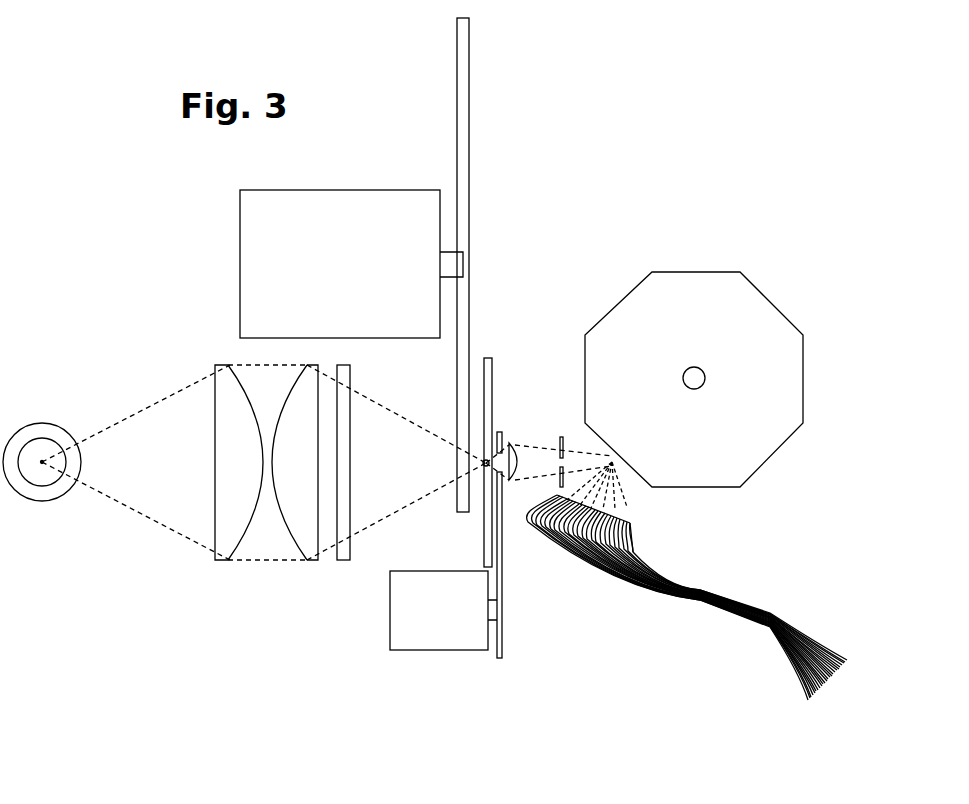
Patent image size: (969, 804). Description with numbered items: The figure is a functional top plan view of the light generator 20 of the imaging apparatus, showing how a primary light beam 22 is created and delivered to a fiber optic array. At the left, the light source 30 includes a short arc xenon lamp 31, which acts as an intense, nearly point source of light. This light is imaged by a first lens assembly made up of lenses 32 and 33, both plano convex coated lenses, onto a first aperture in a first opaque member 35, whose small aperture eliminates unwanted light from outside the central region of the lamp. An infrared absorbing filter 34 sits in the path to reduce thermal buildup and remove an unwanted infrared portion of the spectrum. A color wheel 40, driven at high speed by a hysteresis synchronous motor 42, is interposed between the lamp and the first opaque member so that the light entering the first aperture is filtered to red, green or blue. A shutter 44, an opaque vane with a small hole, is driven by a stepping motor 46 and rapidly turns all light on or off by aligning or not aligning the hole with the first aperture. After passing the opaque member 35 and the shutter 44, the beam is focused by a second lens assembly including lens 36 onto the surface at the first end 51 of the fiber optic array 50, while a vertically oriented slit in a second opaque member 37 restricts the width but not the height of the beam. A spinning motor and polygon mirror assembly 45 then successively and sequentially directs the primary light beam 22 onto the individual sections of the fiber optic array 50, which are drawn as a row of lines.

The light generator 20 is at (210, 173).
The primary light beam 22 is at (363, 397).
The light source 30 is at (278, 633).
The short arc xenon lamp 31 is at (70, 487).
The lens 32 is at (217, 558).
The lens 33 is at (318, 560).
The infrared absorbing filter 34 is at (350, 558).
The first opaque member 35 is at (493, 358).
The lens 36 is at (517, 448).
The second opaque member 37 is at (565, 437).
The color wheel 40 is at (469, 263).
The hysteresis synchronous motor 42 is at (440, 190).
The shutter 44 is at (502, 432).
The motor and polygon mirror assembly 45 is at (652, 272).
The stepping motor 46 is at (390, 650).
The fiber optic array 50 is at (633, 548).
The first end 51 is at (628, 522).